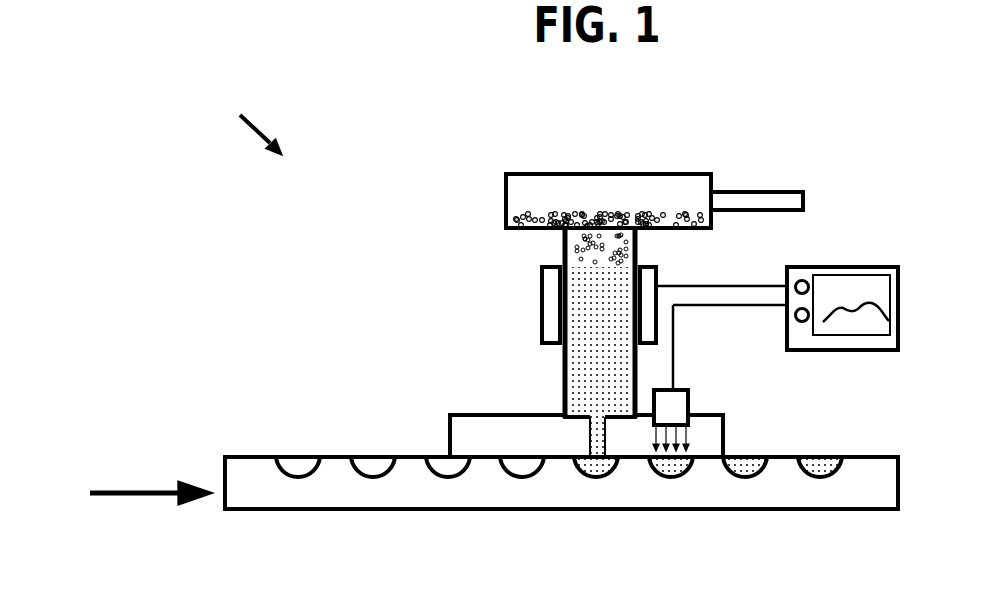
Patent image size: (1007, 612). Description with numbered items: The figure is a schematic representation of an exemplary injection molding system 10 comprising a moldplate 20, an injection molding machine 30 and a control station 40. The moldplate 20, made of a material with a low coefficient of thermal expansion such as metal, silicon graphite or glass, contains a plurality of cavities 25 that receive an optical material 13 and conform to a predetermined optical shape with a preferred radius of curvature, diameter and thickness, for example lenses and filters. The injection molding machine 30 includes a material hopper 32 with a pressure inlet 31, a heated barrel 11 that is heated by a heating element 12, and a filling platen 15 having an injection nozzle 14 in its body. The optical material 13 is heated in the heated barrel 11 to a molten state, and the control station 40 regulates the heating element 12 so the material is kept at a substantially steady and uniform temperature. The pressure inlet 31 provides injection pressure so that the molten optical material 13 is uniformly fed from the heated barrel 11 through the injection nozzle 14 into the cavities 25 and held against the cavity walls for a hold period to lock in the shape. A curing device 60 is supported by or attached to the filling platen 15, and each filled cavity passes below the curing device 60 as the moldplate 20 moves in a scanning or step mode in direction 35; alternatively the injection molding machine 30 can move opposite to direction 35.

The injection molding system 10 is at (222, 108).
The heated barrel 11 is at (561, 262).
The heating element 12 is at (539, 332).
The optical material 13 is at (561, 378).
The injection nozzle 14 is at (588, 432).
The filling platen 15 is at (468, 423).
The moldplate 20 is at (900, 480).
The cavities 25 is at (676, 478).
The injection molding machine 30 is at (545, 161).
The pressure inlet 31 is at (770, 189).
The material hopper 32 is at (620, 189).
The direction 35 is at (135, 488).
The control station 40 is at (880, 265).
The curing device 60 is at (692, 398).